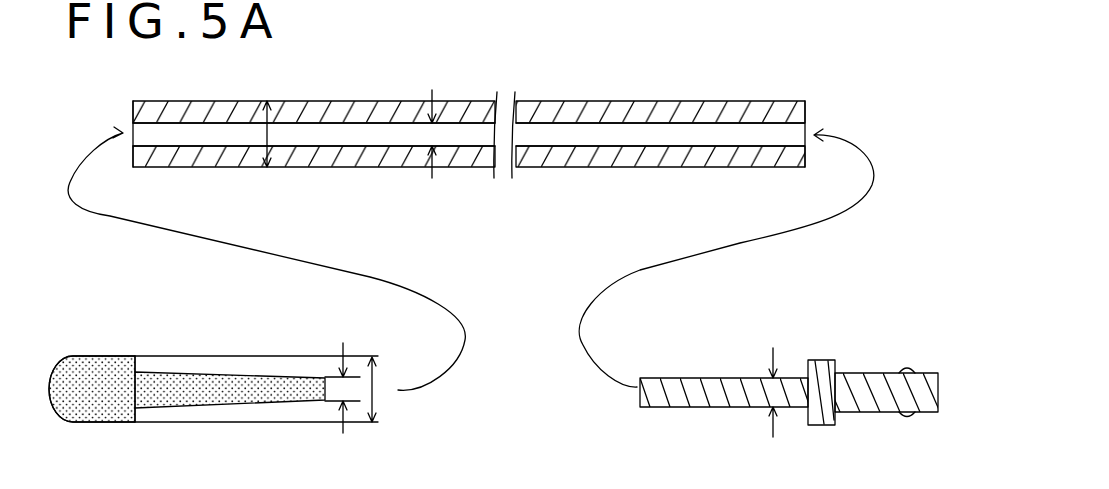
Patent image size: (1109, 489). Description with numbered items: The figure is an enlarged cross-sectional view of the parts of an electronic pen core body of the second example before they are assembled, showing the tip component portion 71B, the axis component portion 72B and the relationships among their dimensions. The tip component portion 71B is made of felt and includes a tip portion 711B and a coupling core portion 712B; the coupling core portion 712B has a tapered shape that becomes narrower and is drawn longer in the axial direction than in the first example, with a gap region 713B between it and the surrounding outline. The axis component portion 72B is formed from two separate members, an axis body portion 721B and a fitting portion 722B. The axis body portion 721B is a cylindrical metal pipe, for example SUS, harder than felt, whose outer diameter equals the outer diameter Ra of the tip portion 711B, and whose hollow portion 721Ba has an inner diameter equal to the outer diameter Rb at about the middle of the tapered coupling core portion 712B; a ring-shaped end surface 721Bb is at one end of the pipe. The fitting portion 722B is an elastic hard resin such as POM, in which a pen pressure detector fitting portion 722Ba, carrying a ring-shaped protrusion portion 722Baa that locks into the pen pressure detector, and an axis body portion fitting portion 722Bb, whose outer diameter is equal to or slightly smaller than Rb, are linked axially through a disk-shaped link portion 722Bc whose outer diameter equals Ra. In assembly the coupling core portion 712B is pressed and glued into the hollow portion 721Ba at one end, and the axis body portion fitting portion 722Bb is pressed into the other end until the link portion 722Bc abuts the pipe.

The tip component portion 71B is at (257, 303).
The tip portion 711B is at (88, 357).
The coupling core portion 712B is at (168, 372).
The gap / slot 713B is at (147, 411).
The axis component portion 72B is at (515, 355).
The axis body portion 721B is at (436, 222).
The hollow portion 721Ba is at (615, 133).
The ring-shaped end surface 721Bb is at (133, 112).
The fitting portion 722B is at (738, 309).
The pen pressure detector fitting portion 722Ba is at (897, 395).
The ring-shaped protrusion portion 722Baa is at (906, 369).
The axis body portion fitting portion 722Bb is at (787, 397).
The link portion 722Bc is at (827, 367).
The outer diameter Ra is at (270, 134).
The outer diameter / inner diameter Rb is at (434, 131).